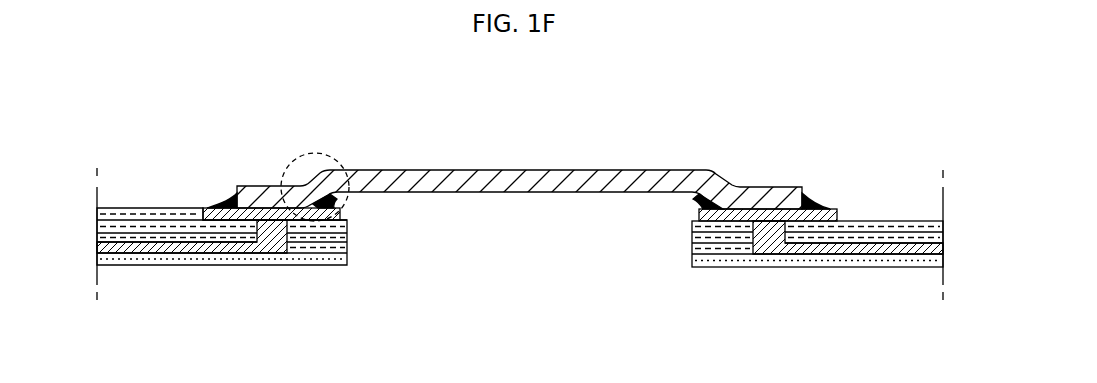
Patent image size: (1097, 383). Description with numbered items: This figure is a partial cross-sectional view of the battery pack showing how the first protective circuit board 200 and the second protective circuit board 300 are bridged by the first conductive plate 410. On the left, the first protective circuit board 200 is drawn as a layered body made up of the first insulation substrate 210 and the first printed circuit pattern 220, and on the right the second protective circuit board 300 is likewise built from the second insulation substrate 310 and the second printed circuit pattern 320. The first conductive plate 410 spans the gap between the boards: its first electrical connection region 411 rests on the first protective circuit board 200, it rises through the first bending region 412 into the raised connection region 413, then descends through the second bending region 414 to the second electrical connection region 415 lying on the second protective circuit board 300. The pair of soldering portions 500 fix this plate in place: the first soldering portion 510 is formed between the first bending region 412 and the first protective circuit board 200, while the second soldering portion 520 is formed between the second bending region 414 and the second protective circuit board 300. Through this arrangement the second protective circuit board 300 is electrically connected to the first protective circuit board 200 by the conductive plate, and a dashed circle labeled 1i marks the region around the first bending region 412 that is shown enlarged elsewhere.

The enlarged region 1i is at (338, 159).
The first protective circuit board 200 is at (227, 273).
The first insulation substrate 210 is at (322, 255).
The first printed circuit pattern 220 is at (273, 245).
The second protective circuit board 300 is at (815, 273).
The second insulation substrate 310 is at (718, 258).
The second printed circuit pattern 320 is at (767, 245).
The first conductive plate 410 is at (530, 147).
The first electrical connection region 411 is at (258, 184).
The first bending region 412 is at (310, 172).
The connection region 413 is at (500, 170).
The second bending region 414 is at (722, 172).
The second electrical connection region 415 is at (789, 195).
The soldering portions 500 is at (624, 306).
The first soldering portion 510 is at (337, 201).
The second soldering portion 520 is at (700, 203).